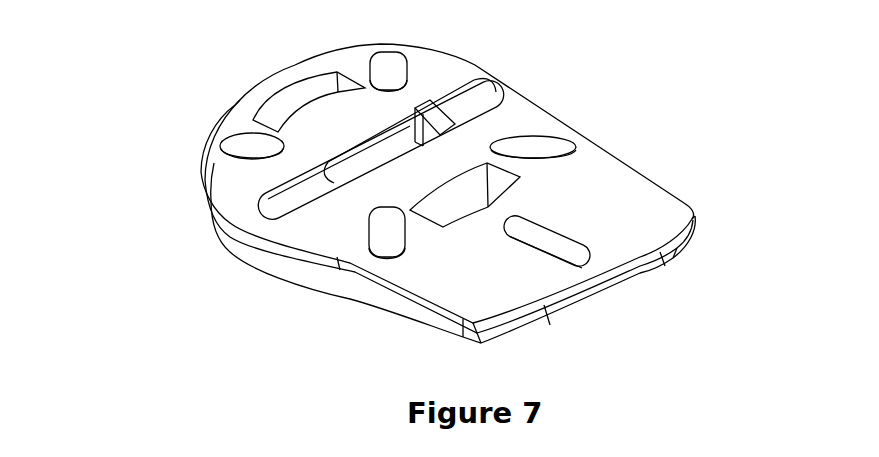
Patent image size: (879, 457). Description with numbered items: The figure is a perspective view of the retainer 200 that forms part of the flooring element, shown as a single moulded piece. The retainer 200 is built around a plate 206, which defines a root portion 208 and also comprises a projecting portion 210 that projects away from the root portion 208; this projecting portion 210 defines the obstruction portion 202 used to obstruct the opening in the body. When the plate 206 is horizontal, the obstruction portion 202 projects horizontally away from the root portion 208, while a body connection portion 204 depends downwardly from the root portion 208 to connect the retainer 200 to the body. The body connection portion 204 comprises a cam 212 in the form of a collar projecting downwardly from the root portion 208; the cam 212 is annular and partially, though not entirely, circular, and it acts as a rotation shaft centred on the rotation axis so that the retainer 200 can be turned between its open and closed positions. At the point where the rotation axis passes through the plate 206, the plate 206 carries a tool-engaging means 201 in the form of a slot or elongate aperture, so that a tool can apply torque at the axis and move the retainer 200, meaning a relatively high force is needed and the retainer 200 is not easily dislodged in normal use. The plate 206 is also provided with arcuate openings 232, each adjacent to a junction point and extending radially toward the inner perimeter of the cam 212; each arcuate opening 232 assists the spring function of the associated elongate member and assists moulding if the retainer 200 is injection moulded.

The retainer 200 is at (402, 183).
The tool-engaging means 201 is at (375, 162).
The obstruction portion 202 is at (640, 217).
The body connection portion 204 is at (440, 72).
The plate 206 is at (343, 227).
The root portion 208 is at (233, 177).
The projecting portion 210 is at (540, 292).
The cam 212 is at (240, 252).
The arcuate opening 232 is at (268, 108).